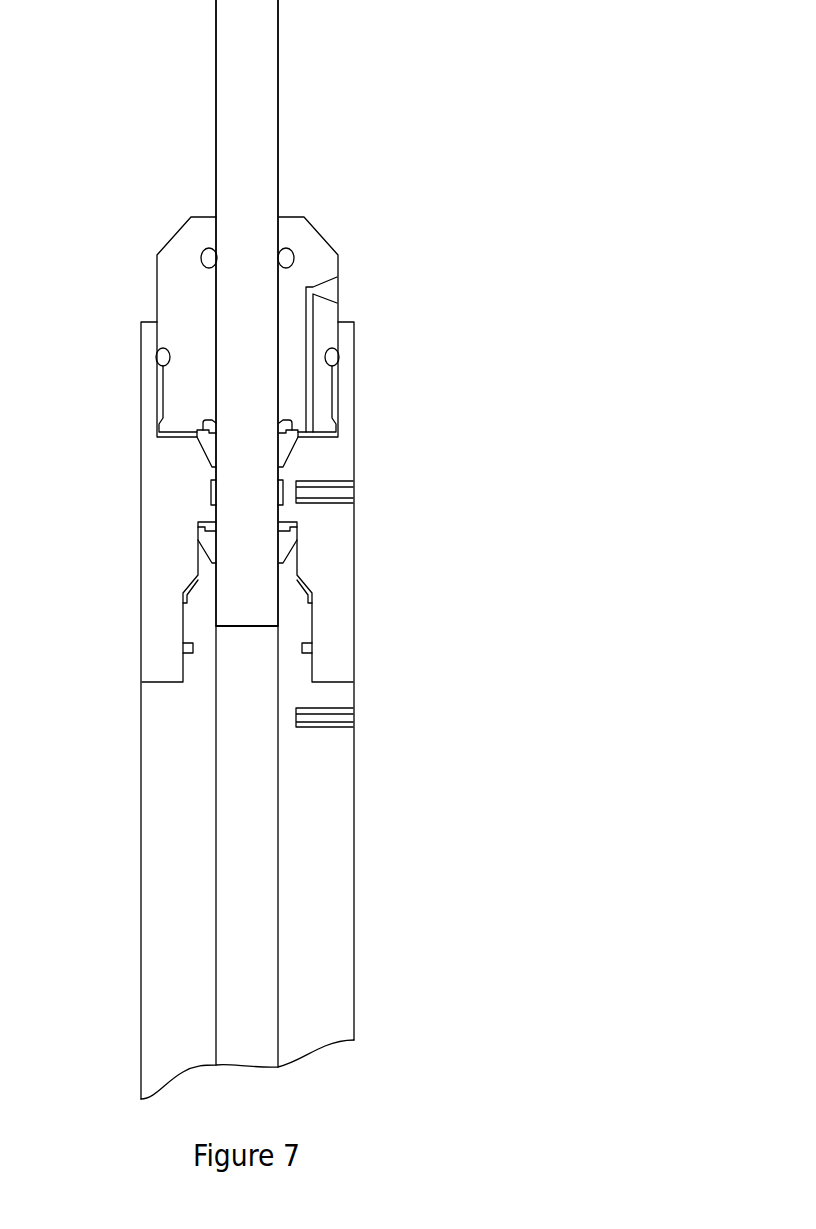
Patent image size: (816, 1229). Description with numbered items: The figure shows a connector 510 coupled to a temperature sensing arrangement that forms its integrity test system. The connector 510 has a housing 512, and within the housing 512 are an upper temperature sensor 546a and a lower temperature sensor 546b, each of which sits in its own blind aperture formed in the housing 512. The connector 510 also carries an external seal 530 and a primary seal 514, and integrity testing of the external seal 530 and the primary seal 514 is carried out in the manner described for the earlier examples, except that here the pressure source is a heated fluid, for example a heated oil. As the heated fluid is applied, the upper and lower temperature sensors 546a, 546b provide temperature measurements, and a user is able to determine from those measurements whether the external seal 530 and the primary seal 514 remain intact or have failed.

The connector 510 is at (405, 132).
The housing 512 is at (333, 578).
The primary seal 514 is at (205, 545).
The external seal 530 is at (207, 447).
The upper temperature sensor 546a is at (330, 482).
The lower temperature sensor 546b is at (328, 712).